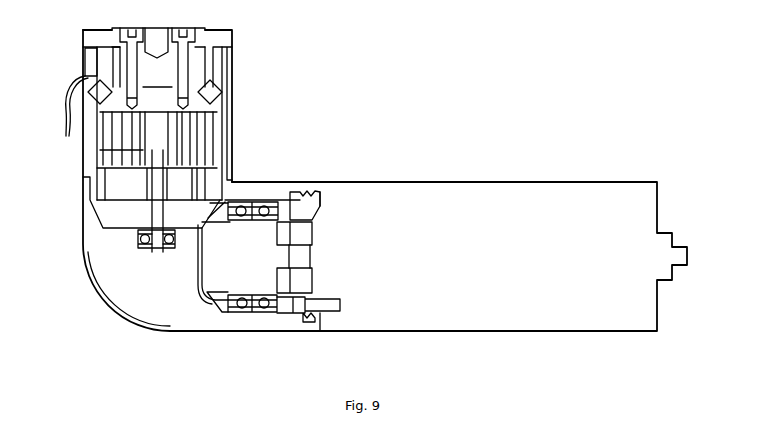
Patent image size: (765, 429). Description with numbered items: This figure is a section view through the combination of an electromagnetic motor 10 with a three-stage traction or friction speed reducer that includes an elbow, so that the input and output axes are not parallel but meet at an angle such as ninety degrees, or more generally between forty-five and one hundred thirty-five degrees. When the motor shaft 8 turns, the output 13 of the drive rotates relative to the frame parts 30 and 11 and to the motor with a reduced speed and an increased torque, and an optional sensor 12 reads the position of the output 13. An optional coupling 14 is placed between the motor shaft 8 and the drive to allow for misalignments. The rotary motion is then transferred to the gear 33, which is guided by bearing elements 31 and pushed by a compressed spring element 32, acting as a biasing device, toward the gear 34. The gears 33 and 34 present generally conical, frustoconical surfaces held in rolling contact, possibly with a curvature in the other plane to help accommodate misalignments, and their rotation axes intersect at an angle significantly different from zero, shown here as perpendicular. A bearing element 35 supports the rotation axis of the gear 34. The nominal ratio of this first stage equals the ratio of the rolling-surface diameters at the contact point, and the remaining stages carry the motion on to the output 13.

The motor shaft 8 is at (302, 253).
The electromagnetic motor 10 is at (428, 190).
The frame part 11 is at (225, 78).
The sensor 12 is at (92, 62).
The output 13 is at (215, 27).
The coupling 14 is at (283, 230).
The frame part 30 is at (133, 288).
The bearing elements 31 is at (263, 303).
The compressed spring element 32 is at (227, 313).
The gear 33 is at (215, 288).
The gear 34 is at (112, 215).
The bearing element 35 is at (129, 252).